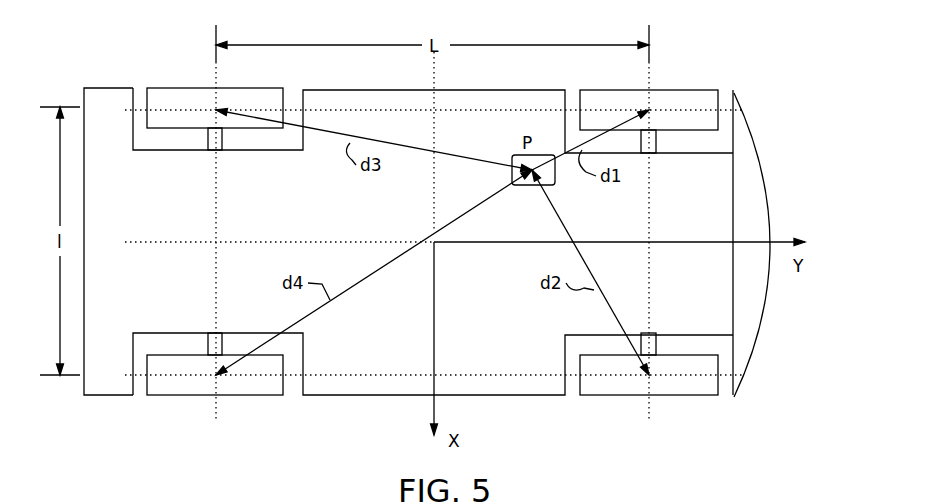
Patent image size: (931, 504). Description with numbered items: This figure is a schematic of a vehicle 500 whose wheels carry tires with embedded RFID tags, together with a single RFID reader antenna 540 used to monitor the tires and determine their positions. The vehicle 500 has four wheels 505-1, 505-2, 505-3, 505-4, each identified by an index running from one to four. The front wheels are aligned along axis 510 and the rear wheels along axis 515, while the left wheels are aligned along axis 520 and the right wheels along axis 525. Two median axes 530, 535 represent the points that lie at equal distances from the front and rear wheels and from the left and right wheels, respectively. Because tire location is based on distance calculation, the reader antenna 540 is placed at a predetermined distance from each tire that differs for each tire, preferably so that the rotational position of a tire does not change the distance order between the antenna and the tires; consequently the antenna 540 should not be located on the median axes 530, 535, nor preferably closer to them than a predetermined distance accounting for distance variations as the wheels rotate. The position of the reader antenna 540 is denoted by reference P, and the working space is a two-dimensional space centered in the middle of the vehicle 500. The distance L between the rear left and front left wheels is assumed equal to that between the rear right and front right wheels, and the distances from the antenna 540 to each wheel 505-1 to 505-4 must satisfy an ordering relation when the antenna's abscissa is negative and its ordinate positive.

The vehicle 500 is at (762, 178).
The wheel 505-1 is at (686, 90).
The wheel 505-2 is at (690, 397).
The wheel 505-3 is at (252, 88).
The wheel 505-4 is at (257, 397).
The axis 510 is at (653, 276).
The axis 515 is at (214, 283).
The axis 520 is at (509, 112).
The axis 525 is at (527, 370).
The median axis 530 is at (434, 73).
The median axis 535 is at (175, 240).
The RFID reader antenna 540 is at (509, 180).